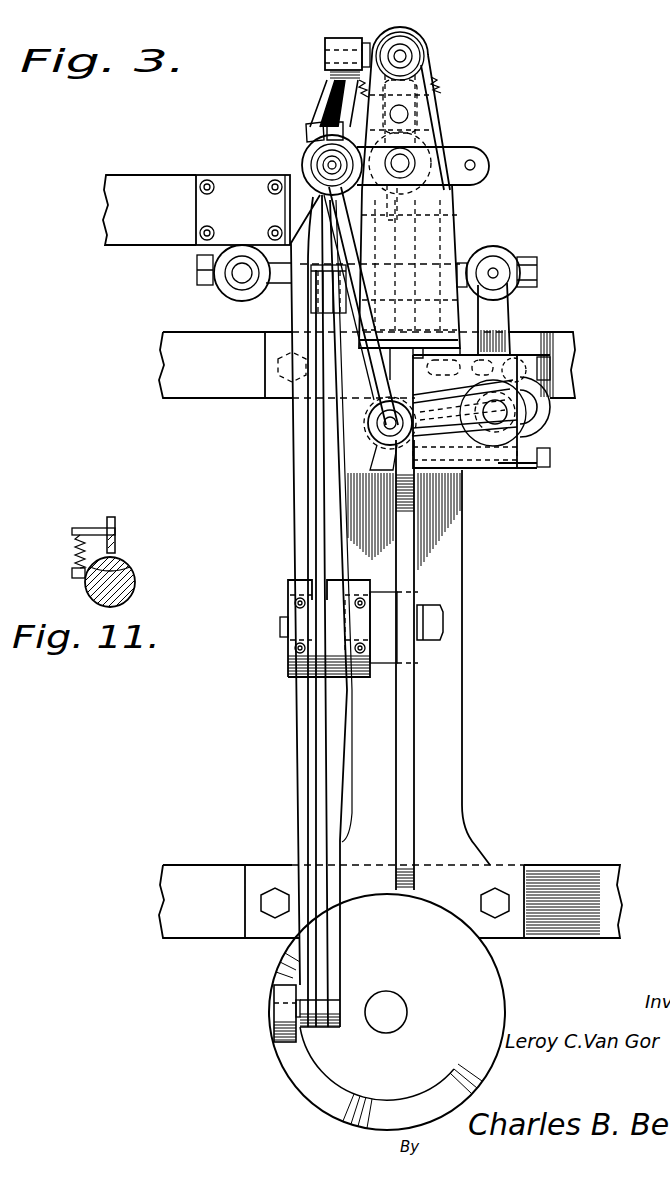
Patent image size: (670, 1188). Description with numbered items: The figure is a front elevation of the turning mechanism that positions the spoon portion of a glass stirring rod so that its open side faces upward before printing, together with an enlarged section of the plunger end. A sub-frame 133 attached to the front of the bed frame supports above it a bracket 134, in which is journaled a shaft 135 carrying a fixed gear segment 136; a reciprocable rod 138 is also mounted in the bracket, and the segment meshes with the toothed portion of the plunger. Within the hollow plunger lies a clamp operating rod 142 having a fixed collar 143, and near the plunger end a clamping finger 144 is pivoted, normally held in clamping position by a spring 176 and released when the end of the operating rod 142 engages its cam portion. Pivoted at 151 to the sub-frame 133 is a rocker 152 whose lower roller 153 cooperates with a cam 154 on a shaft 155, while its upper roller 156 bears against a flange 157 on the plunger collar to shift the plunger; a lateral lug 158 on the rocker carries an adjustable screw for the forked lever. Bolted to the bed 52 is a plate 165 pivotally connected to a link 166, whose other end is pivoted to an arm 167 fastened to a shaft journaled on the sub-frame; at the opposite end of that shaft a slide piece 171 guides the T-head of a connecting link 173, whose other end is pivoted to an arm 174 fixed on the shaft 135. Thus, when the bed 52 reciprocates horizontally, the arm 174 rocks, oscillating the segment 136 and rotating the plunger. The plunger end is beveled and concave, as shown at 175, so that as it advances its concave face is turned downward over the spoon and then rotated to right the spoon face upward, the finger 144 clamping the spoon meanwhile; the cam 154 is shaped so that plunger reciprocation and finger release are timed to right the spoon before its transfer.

In FIG. 3, the bed 52 is at (172, 182).
In FIG. 3, the sub-frame 133 is at (455, 588).
In FIG. 3, the bracket 134 is at (455, 238).
In FIG. 3, the shaft 135 is at (403, 163).
In FIG. 3, the gear segment 136 is at (445, 90).
In FIG. 3, the rod 138 is at (410, 111).
In FIG. 3, the clamp operating rod 142 is at (405, 56).
In FIG. 3, the collar 143 is at (412, 33).
In FIG. 11, the clamping finger 144 is at (117, 537).
In FIG. 3, the pivot 151 is at (285, 635).
In FIG. 3, the rocker 152 is at (302, 823).
In FIG. 3, the roller 153 is at (277, 992).
In FIG. 3, the cam 154 is at (287, 1058).
In FIG. 3, the shaft 155 is at (393, 1000).
In FIG. 3, the roller 156 is at (368, 27).
In FIG. 3, the flange 157 is at (433, 44).
In FIG. 3, the lateral lug 158 is at (337, 293).
In FIG. 3, the plate 165 is at (263, 165).
In FIG. 3, the link 166 is at (467, 267).
In FIG. 3, the arm 167 is at (503, 308).
In FIG. 3, the slide piece 171 is at (457, 437).
In FIG. 3, the connecting link 173 is at (377, 360).
In FIG. 3, the arm 174 is at (472, 157).
In FIG. 11, the beveled concave end 175 is at (135, 582).
In FIG. 11, the spring 176 is at (80, 555).